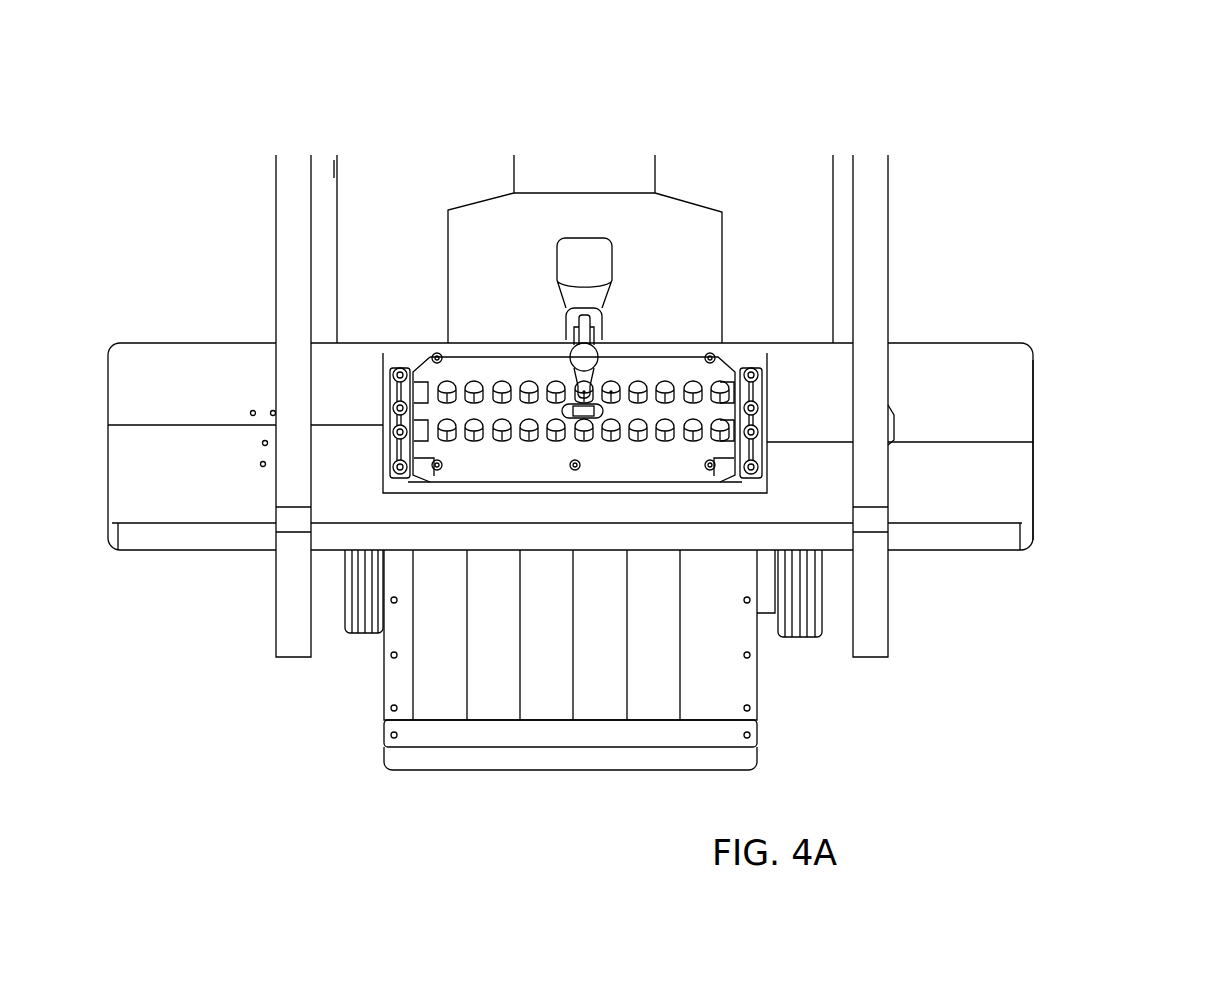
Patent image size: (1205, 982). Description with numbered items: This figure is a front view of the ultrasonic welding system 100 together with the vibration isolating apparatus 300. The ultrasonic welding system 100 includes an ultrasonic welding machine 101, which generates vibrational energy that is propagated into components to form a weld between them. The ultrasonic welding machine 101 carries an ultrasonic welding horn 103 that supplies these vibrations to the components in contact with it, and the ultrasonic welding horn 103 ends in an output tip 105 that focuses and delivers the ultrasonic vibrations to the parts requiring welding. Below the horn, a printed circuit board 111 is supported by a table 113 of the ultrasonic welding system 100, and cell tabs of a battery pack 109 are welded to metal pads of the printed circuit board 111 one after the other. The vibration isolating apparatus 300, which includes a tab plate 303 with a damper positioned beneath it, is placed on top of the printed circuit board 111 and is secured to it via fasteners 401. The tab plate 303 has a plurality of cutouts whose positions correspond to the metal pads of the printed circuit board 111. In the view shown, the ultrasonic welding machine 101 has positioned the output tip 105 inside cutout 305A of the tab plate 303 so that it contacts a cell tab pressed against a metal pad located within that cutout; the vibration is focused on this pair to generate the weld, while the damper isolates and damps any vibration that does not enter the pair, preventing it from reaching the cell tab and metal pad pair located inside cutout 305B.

The ultrasonic welding system 100 is at (800, 63).
The ultrasonic welding machine 101 is at (668, 218).
The ultrasonic welding horn 103 is at (671, 318).
The output tip 105 is at (586, 378).
The battery pack 109 is at (383, 709).
The printed circuit board 111 is at (381, 403).
The table 113 is at (964, 473).
The vibration isolating apparatus 300 is at (653, 448).
The tab plate 303 is at (714, 375).
The cutout 305A is at (573, 383).
The cutout 305B is at (611, 394).
The fasteners 401 is at (576, 483).